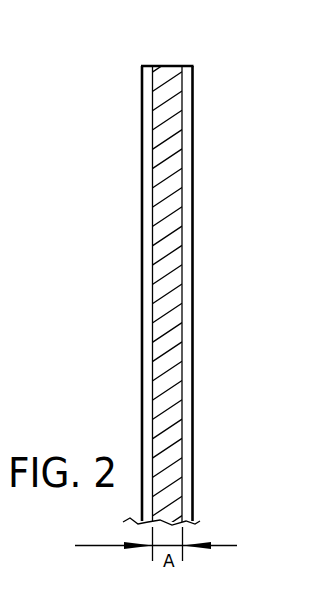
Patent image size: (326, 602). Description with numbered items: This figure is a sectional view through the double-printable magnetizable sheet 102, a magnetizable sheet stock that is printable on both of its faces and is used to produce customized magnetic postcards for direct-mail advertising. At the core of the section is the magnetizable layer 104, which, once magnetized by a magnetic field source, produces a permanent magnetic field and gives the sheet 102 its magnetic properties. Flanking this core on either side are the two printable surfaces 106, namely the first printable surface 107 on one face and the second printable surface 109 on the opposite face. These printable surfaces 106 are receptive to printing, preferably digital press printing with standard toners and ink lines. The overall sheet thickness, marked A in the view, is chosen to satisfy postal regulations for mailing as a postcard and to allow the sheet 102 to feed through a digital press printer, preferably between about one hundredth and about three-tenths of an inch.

The double-printable magnetizable sheet 102 is at (325, 30).
The magnetizable layer 104 is at (170, 66).
The printable surface 106 is at (142, 128).
The first printable surface 107 is at (142, 313).
The second printable surface 109 is at (193, 353).